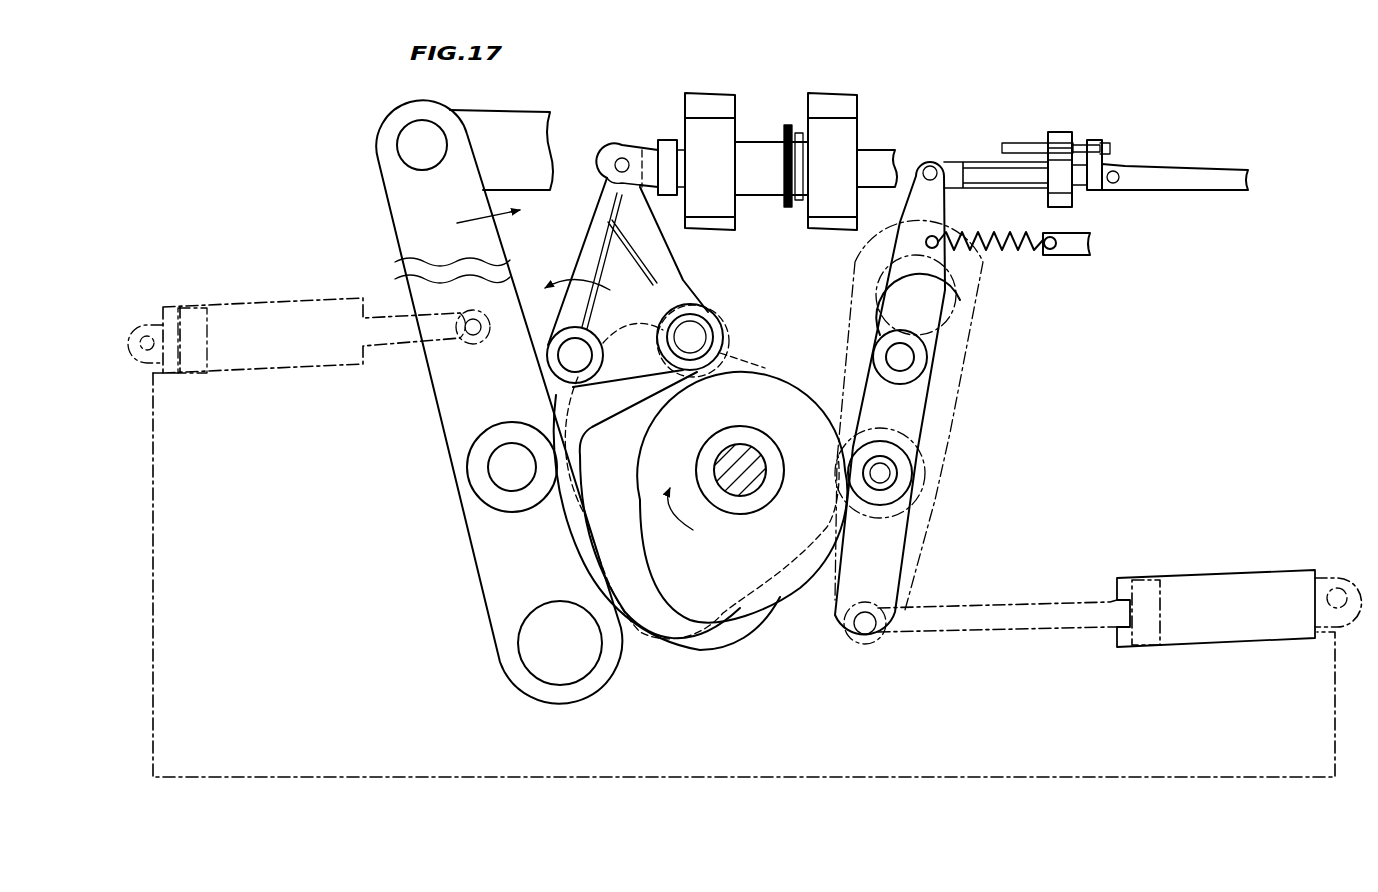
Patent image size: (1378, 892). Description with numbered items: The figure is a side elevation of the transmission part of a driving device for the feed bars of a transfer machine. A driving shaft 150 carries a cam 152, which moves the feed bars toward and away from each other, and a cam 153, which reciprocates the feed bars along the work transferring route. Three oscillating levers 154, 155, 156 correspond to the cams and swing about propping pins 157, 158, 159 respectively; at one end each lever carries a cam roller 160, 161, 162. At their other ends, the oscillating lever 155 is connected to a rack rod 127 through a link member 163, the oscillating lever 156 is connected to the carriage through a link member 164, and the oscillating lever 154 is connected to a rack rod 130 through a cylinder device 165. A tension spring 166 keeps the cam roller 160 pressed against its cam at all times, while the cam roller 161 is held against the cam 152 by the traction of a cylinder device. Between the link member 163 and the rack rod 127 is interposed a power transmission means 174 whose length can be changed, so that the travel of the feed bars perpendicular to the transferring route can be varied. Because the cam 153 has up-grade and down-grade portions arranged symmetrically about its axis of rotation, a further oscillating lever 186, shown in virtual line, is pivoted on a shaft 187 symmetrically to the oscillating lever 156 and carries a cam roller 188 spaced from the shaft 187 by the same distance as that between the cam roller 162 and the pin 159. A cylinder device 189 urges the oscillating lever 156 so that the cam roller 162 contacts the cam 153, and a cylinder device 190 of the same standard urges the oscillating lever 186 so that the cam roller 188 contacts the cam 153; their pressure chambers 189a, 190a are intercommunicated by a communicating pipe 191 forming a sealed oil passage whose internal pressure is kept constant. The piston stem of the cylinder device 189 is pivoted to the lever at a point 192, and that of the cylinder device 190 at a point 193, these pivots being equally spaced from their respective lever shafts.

The rack rod 127 is at (876, 160).
The rack rod 130 is at (1160, 180).
The driving shaft 150 is at (763, 483).
The cam 152 is at (645, 588).
The cam 153 is at (700, 632).
The oscillating lever 154 is at (915, 410).
The oscillating lever 155 is at (668, 283).
The oscillating lever 156 is at (500, 572).
The propping pin 157 is at (910, 358).
The propping pin 158 is at (567, 358).
The propping pin 159 is at (567, 677).
The cam roller 160 is at (905, 493).
The cam roller 161 is at (705, 346).
The cam roller 162 is at (492, 490).
The link member 163 is at (648, 160).
The link member 164 is at (517, 127).
The cylinder device 165 is at (975, 172).
The tension spring 166 is at (990, 242).
The power transmission means 174 is at (760, 133).
The oscillating lever 186 is at (965, 398).
The shaft 187 is at (960, 286).
The cam roller 188 is at (935, 478).
The cylinder device 189 is at (280, 300).
The pressure chamber 189a is at (178, 378).
The cylinder device 190 is at (1205, 572).
The pressure chamber 190a is at (1220, 628).
The communicating pipe 191 is at (741, 779).
The point of the piston stem 192 is at (462, 322).
The point of the piston stem 193 is at (868, 636).